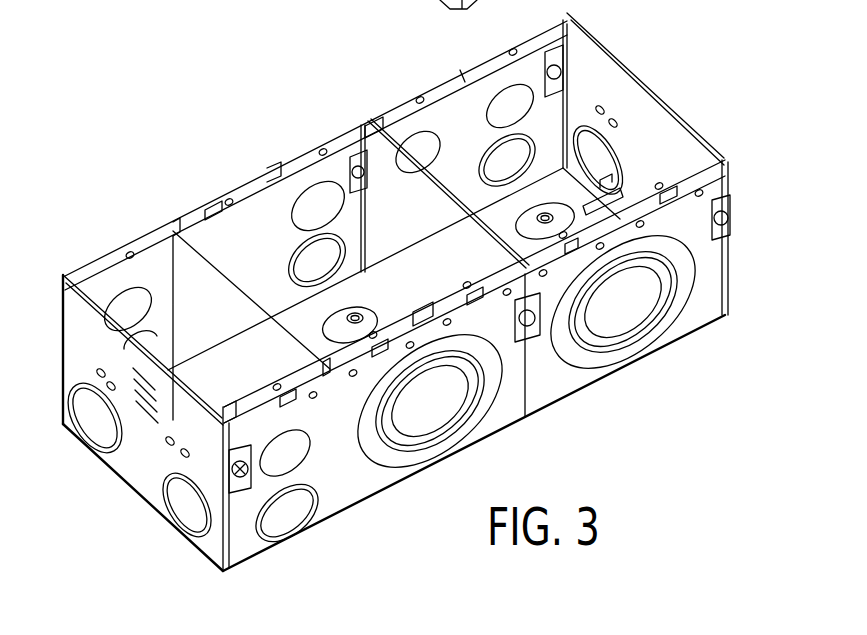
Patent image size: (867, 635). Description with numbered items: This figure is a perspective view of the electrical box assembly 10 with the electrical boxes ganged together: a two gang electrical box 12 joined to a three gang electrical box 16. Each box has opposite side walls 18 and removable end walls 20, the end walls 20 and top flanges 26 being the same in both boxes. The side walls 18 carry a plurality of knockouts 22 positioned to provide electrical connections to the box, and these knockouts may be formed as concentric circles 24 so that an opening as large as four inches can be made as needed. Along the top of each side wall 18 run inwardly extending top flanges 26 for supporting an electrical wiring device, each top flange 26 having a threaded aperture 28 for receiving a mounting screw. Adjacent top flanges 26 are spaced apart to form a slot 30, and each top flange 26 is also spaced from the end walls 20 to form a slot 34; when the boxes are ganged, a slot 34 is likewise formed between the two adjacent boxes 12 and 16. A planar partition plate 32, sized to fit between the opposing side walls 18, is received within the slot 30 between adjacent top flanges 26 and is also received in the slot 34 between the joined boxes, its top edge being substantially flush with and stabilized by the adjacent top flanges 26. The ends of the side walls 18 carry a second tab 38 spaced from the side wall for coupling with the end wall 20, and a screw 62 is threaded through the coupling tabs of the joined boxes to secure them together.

The electrical box assembly 10 is at (230, 173).
The electrical box 12 is at (623, 370).
The three gang electrical box 16 is at (363, 503).
The side wall 18 is at (268, 178).
The end wall 20 is at (143, 461).
The knockout 22 is at (640, 342).
The concentric circles 24 is at (398, 407).
The top flange 26 is at (142, 243).
The threaded aperture 28 is at (128, 253).
The slot 30 is at (273, 168).
The partition plate 32 is at (213, 212).
The slot 34 is at (375, 152).
The second tab 38 is at (245, 497).
The screw 62 is at (527, 340).